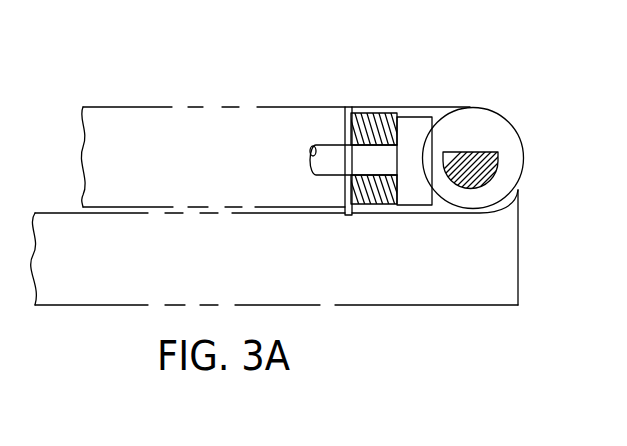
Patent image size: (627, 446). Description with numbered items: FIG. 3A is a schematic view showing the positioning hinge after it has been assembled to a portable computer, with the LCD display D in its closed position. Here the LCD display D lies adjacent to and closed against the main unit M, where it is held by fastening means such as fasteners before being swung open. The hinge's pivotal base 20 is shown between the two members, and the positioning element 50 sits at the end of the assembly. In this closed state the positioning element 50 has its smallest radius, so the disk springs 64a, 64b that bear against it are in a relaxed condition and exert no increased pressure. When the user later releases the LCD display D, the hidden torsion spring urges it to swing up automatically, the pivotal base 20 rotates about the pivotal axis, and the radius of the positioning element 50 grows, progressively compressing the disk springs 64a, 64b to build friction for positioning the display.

The LCD display D is at (135, 108).
The main unit M is at (83, 304).
The pivotal base 20 is at (345, 127).
The disk spring 64a is at (357, 113).
The disk spring 64b is at (399, 117).
The positioning element 50 is at (520, 138).